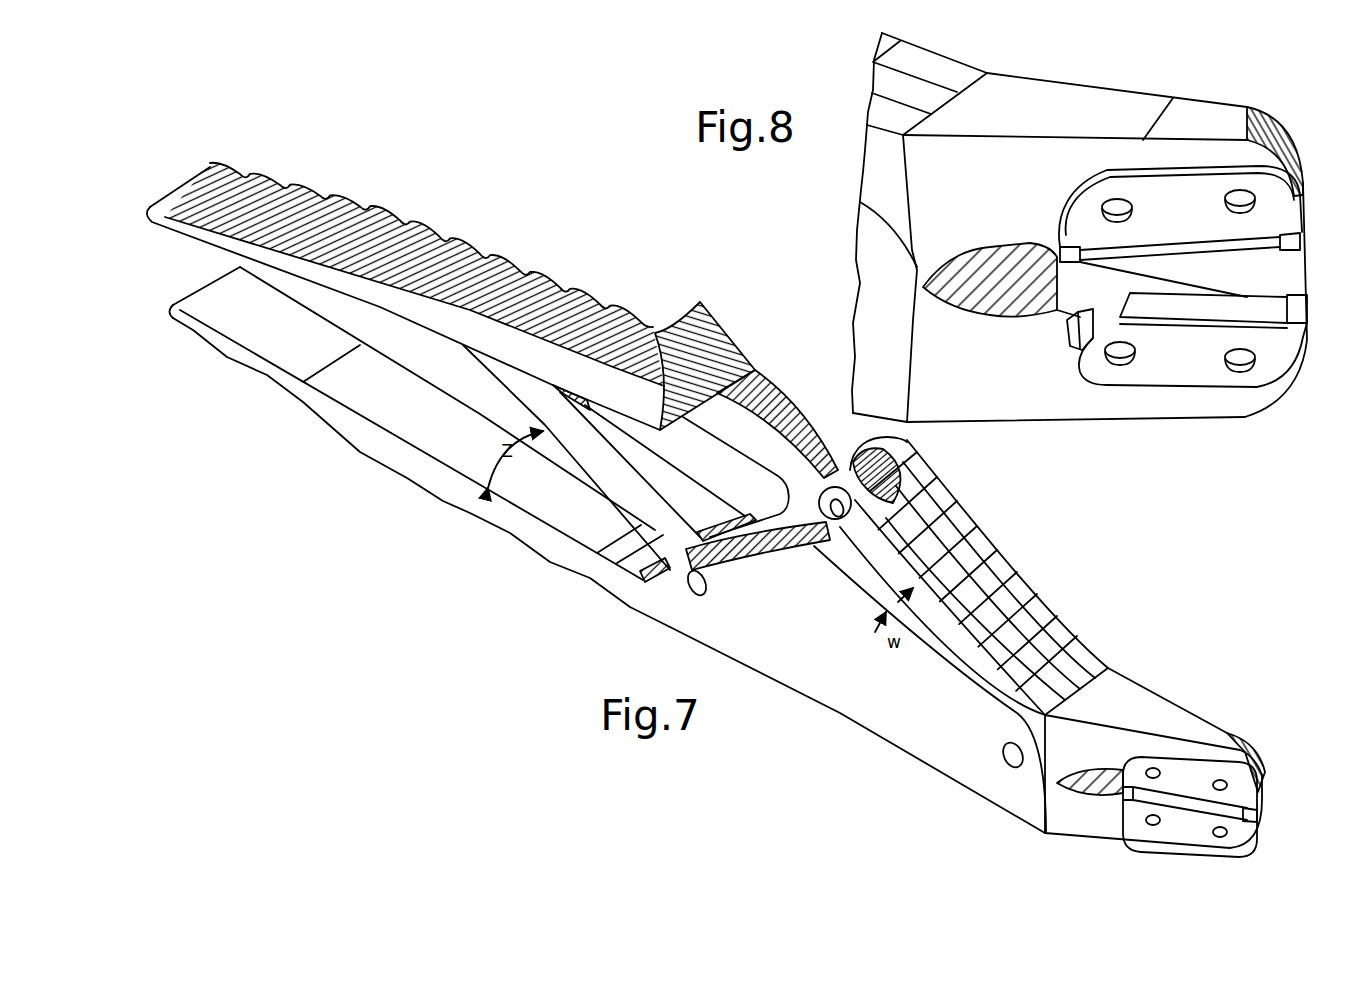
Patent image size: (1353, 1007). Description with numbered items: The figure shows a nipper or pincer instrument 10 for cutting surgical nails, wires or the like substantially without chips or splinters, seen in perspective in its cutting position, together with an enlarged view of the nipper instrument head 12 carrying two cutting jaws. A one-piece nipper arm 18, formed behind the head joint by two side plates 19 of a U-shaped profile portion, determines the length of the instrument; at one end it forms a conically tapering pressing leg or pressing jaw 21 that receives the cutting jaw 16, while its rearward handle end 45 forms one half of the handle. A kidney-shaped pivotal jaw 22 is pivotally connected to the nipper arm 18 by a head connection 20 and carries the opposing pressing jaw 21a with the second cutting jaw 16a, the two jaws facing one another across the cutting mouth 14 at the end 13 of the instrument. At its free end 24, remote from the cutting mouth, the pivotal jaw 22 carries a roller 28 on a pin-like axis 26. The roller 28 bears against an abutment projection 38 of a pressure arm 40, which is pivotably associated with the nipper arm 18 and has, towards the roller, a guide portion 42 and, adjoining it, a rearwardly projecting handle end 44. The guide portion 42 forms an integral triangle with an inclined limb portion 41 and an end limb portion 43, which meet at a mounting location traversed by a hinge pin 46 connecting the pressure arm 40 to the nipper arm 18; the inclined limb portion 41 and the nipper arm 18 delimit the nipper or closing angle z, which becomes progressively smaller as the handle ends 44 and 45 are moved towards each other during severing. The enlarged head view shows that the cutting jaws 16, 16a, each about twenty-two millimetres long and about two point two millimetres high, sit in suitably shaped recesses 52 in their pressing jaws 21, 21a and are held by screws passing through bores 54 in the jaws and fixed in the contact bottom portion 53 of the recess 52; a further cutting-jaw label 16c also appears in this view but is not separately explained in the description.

In FIG. 7, the nipper or pincer instrument 10 is at (607, 262).
In FIG. 7, the nipper instrument head 12 is at (1150, 706).
In FIG. 8, the nipper instrument head 12 is at (1170, 424).
In FIG. 7, the end of the nipper instrument 13 is at (1268, 780).
In FIG. 8, the cutting mouth 14 is at (1266, 272).
In FIG. 7, the cutting jaw 16 is at (1172, 822).
In FIG. 8, the cutting jaw 16 is at (1087, 357).
In FIG. 7, the cutting jaw 16a is at (1180, 778).
In FIG. 8, the friction pad 16c is at (1298, 195).
In FIG. 7, the nipper arm 18 is at (508, 527).
In FIG. 8, the nipper arm 18 is at (884, 345).
In FIG. 7, the side plates 19 is at (797, 644).
In FIG. 7, the head connection 20 is at (1004, 763).
In FIG. 7, the pressing leg 21 is at (1068, 826).
In FIG. 8, the pressing leg 21 is at (1100, 400).
In FIG. 7, the pressing jaw 21a is at (1123, 697).
In FIG. 8, the pressing jaw 21a is at (1133, 117).
In FIG. 7, the pivotal jaw 22 is at (1077, 727).
In FIG. 8, the pivotal jaw 22 is at (942, 196).
In FIG. 7, the free end 24 is at (818, 496).
In FIG. 7, the pin-like axis 26 is at (826, 548).
In FIG. 7, the roller 28 is at (915, 478).
In FIG. 7, the abutment projection 38 is at (722, 330).
In FIG. 7, the pressure arm 40 is at (521, 260).
In FIG. 7, the inclined limb portion 41 is at (605, 465).
In FIG. 7, the guide portion 42 is at (748, 432).
In FIG. 7, the end limb portion 43 is at (750, 552).
In FIG. 7, the handle end 44 is at (311, 268).
In FIG. 7, the handle end 45 is at (316, 400).
In FIG. 7, the hinge pin 46 is at (690, 594).
In FIG. 8, the recess 52 is at (1068, 345).
In FIG. 8, the contact bottom portion 53 is at (1091, 320).
In FIG. 8, the bores 54 is at (1226, 201).